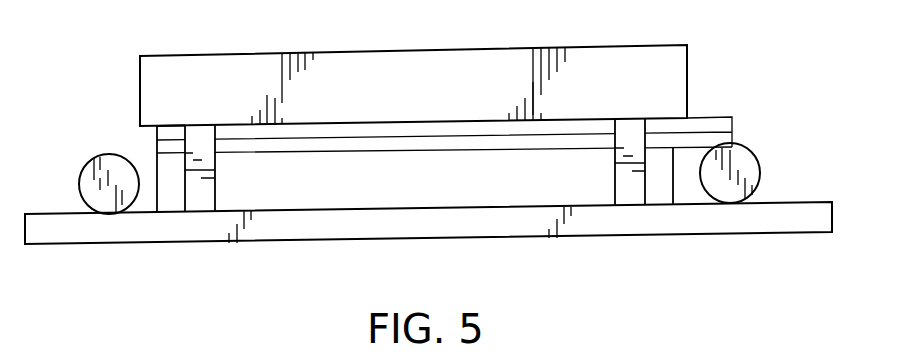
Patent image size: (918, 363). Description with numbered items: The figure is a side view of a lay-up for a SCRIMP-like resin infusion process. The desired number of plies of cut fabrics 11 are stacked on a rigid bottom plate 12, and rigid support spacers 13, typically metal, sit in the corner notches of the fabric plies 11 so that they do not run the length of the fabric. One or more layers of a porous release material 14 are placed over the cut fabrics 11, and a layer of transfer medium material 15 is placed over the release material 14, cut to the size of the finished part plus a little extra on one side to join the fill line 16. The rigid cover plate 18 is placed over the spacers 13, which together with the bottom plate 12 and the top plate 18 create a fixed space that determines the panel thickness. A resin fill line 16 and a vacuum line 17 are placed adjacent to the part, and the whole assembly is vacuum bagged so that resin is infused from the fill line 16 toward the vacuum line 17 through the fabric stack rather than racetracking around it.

The cut fabrics 11 is at (157, 173).
The rigid bottom plate 12 is at (820, 201).
The rigid support spacers 13 is at (183, 197).
The porous release material 14 is at (735, 137).
The transfer medium material 15 is at (722, 116).
The resin fill line 16 is at (762, 175).
The vacuum line 17 is at (78, 175).
The rigid cover plate 18 is at (688, 80).